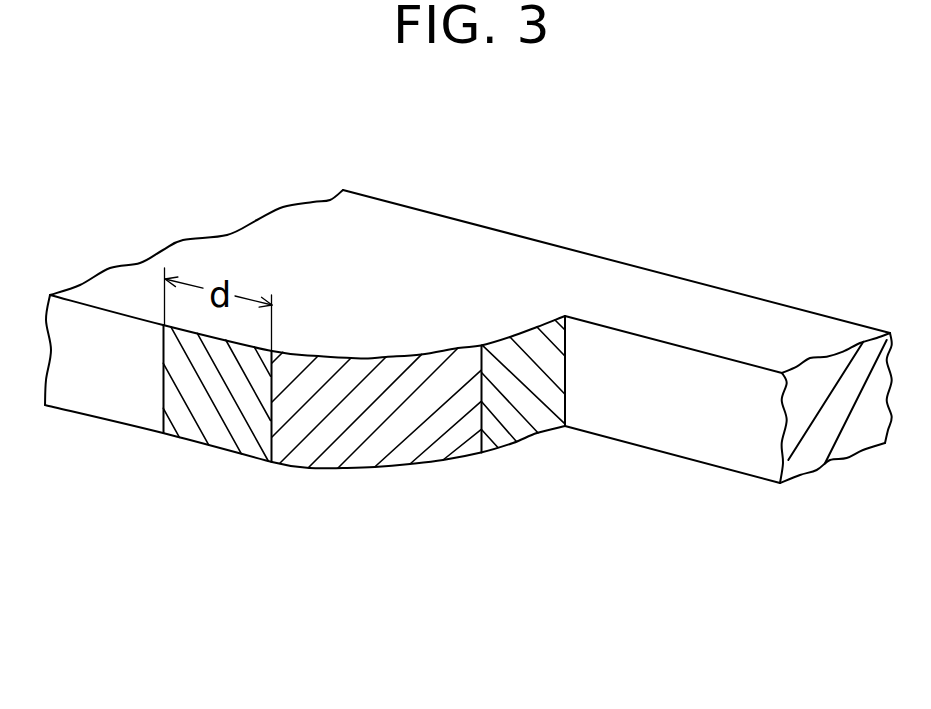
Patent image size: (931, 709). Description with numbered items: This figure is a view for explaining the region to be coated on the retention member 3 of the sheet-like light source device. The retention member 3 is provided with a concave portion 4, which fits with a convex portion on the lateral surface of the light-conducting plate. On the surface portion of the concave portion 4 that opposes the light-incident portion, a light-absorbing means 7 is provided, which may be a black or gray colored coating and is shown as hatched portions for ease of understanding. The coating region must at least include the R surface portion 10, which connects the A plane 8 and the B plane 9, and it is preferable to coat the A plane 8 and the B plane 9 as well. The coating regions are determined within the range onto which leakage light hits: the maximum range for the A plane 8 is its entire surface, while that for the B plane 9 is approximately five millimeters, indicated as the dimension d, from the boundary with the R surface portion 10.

The retention member 3 is at (468, 296).
The concave portion 4 is at (681, 377).
The light-absorbing means 7 is at (305, 513).
The A plane 8 is at (523, 442).
The B plane 9 is at (199, 441).
The R surface portion 10 is at (377, 468).